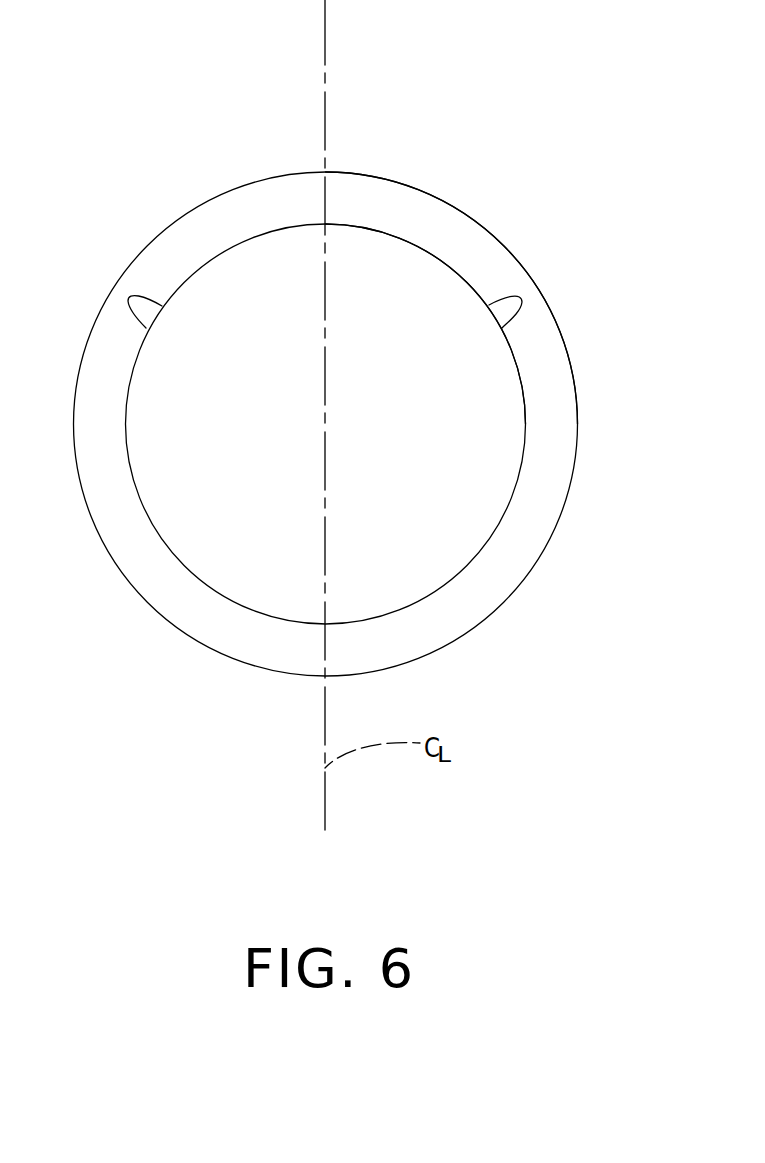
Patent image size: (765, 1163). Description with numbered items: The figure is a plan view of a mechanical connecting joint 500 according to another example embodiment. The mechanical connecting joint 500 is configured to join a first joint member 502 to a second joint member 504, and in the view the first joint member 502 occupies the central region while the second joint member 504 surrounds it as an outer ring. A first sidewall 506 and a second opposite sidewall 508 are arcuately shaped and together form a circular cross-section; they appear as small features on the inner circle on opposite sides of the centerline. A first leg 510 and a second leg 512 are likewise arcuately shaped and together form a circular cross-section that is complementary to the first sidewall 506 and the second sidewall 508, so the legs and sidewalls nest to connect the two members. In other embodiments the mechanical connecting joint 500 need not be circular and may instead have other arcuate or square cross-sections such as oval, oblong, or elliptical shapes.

The mechanical connecting joint 500 is at (525, 90).
The first joint member 502 is at (444, 441).
The second joint member 504 is at (558, 427).
The first sidewall 506 is at (162, 306).
The second opposite sidewall 508 is at (489, 305).
The first leg 510 is at (157, 260).
The second leg 512 is at (463, 230).